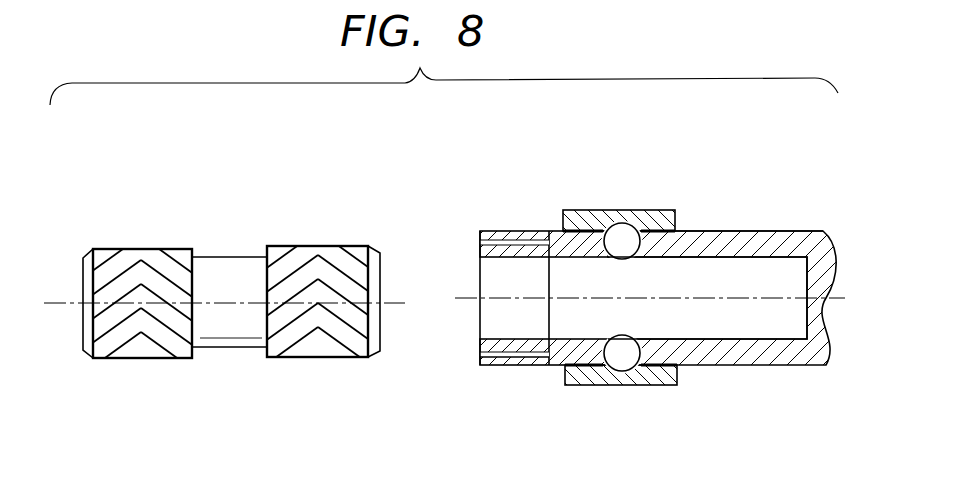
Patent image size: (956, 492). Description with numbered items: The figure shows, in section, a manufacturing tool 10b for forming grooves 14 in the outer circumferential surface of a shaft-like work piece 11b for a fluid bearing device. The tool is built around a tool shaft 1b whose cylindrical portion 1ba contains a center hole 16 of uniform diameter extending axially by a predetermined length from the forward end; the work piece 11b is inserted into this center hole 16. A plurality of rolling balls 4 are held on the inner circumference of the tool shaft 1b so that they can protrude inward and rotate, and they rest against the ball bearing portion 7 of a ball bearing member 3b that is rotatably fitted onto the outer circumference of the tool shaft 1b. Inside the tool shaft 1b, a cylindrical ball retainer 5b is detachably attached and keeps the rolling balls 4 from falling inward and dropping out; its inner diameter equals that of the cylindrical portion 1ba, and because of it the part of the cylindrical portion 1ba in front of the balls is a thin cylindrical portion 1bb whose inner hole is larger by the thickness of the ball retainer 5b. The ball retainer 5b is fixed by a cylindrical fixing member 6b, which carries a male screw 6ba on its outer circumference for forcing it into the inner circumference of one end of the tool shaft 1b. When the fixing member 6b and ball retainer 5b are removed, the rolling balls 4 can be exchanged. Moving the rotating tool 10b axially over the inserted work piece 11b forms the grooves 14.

The grooves 14 is at (141, 342).
The shaft-like work piece 11b is at (305, 246).
The tool shaft 1b is at (750, 366).
The cylindrical portion 1ba is at (743, 231).
The thin cylindrical portion 1bb is at (499, 231).
The center hole 16 is at (777, 272).
The manufacturing tool 10b is at (518, 206).
The fixing member 6b is at (542, 237).
The male screw 6ba is at (487, 366).
The ball retainer 5b is at (576, 234).
The ball bearing member 3b is at (621, 210).
The rolling balls 4 is at (641, 226).
The ball bearing portion 7 is at (628, 372).